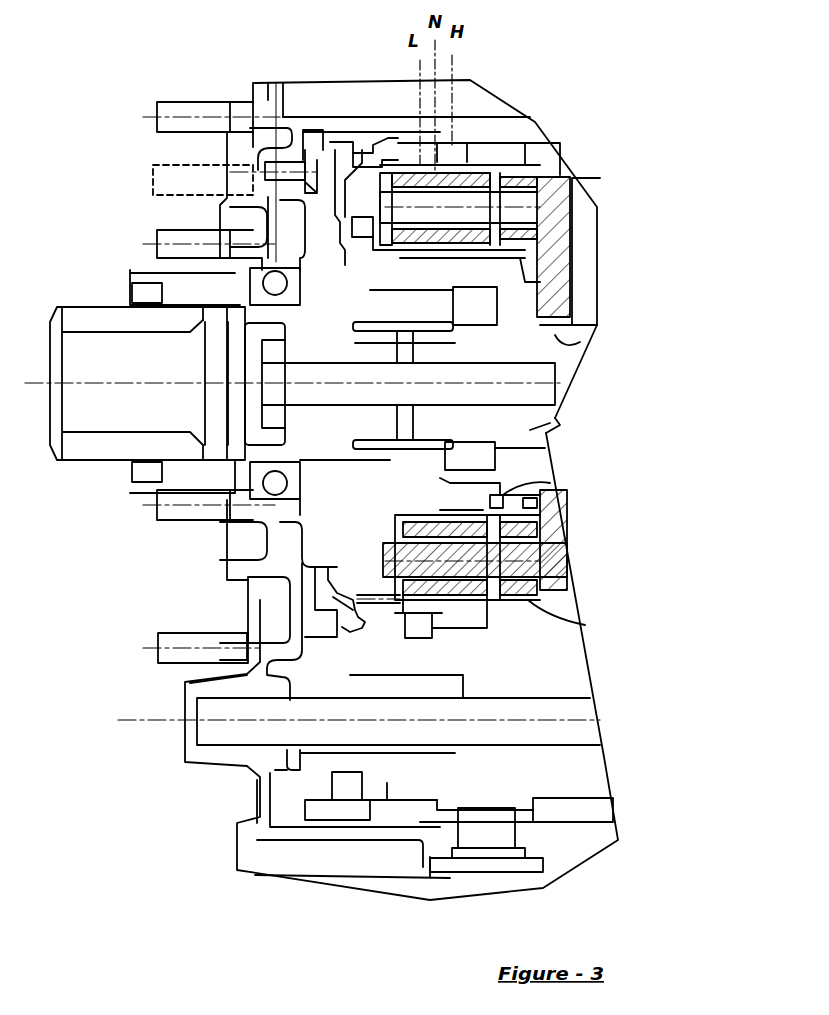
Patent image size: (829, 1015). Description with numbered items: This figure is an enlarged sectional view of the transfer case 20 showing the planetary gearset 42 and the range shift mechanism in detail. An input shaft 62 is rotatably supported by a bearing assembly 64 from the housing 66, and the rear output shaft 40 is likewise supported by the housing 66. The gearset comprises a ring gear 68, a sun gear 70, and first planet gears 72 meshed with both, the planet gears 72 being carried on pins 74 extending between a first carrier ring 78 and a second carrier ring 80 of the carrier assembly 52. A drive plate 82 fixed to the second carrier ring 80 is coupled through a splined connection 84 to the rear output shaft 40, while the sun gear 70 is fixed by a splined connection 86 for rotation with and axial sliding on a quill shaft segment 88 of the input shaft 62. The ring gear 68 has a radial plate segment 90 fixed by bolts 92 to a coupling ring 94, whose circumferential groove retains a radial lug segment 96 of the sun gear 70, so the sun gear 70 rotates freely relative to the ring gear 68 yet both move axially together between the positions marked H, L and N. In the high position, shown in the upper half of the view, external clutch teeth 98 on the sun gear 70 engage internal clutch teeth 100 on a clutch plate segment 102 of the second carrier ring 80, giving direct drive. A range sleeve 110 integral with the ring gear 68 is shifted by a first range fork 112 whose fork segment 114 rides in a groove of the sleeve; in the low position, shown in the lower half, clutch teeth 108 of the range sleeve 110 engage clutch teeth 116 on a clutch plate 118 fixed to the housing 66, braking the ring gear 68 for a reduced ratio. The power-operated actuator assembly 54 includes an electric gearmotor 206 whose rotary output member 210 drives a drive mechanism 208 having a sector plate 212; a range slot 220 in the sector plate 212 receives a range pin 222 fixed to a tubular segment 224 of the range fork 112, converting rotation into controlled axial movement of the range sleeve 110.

The transfer case 20 is at (553, 88).
The rear output shaft 40 is at (550, 423).
The planetary gearset 42 is at (555, 628).
The carrier assembly 52 is at (575, 212).
The power-operated actuator assembly 54 is at (293, 883).
The input shaft 62 is at (80, 312).
The bearing assembly 64 is at (265, 498).
The housing 66 is at (270, 83).
The ring gear 68 is at (528, 166).
The sun gear 70 is at (440, 283).
The first planet gears 72 is at (528, 600).
The pins 74 is at (563, 550).
The first carrier ring 78 is at (405, 562).
The second carrier ring 80 is at (527, 183).
The drive plate 82 is at (560, 250).
The splined connection 84 is at (590, 340).
The splined connection 86 is at (457, 293).
The quill shaft segment 88 is at (397, 312).
The radial plate segment 90 is at (360, 627).
The bolts 92 is at (253, 185).
The coupling ring 94 is at (313, 587).
The radial lug segment 96 is at (343, 263).
The external clutch teeth 98 is at (530, 500).
The internal clutch teeth 100 is at (563, 500).
The clutch plate segment 102 is at (557, 267).
The clutch teeth 108 is at (368, 142).
The range sleeve 110 is at (455, 623).
The first range fork 112 is at (443, 770).
The fork segment 114 is at (418, 653).
The clutch teeth 116 is at (330, 152).
The clutch plate 118 is at (253, 187).
The electric gearmotor 206 is at (480, 880).
The drive mechanism 208 is at (592, 775).
The rotary output member 210 is at (477, 830).
The sector plate 212 is at (593, 807).
The range slot 220 is at (367, 813).
The range pin 222 is at (347, 810).
The tubular segment 224 is at (317, 770).